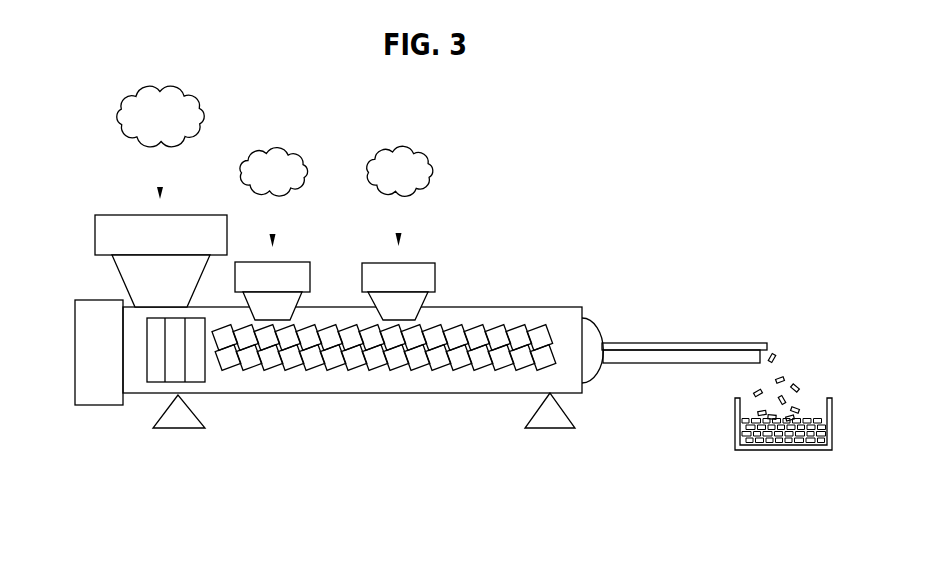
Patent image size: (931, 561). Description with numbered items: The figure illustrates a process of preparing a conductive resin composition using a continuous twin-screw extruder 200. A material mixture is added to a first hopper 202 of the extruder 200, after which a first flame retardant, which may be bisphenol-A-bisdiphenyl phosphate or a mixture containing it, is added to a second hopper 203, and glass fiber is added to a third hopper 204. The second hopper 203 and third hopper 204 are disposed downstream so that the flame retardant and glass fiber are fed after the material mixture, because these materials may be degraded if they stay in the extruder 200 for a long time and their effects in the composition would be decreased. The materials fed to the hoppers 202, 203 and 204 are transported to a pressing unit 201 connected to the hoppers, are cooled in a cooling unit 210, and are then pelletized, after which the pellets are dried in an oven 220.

The continuous twin-screw extruder 200 is at (563, 148).
The pressing unit 201 is at (346, 380).
The first hopper 202 is at (105, 233).
The second hopper 203 is at (302, 268).
The third hopper 204 is at (430, 268).
The cooling unit 210 is at (673, 357).
The oven 220 is at (778, 451).